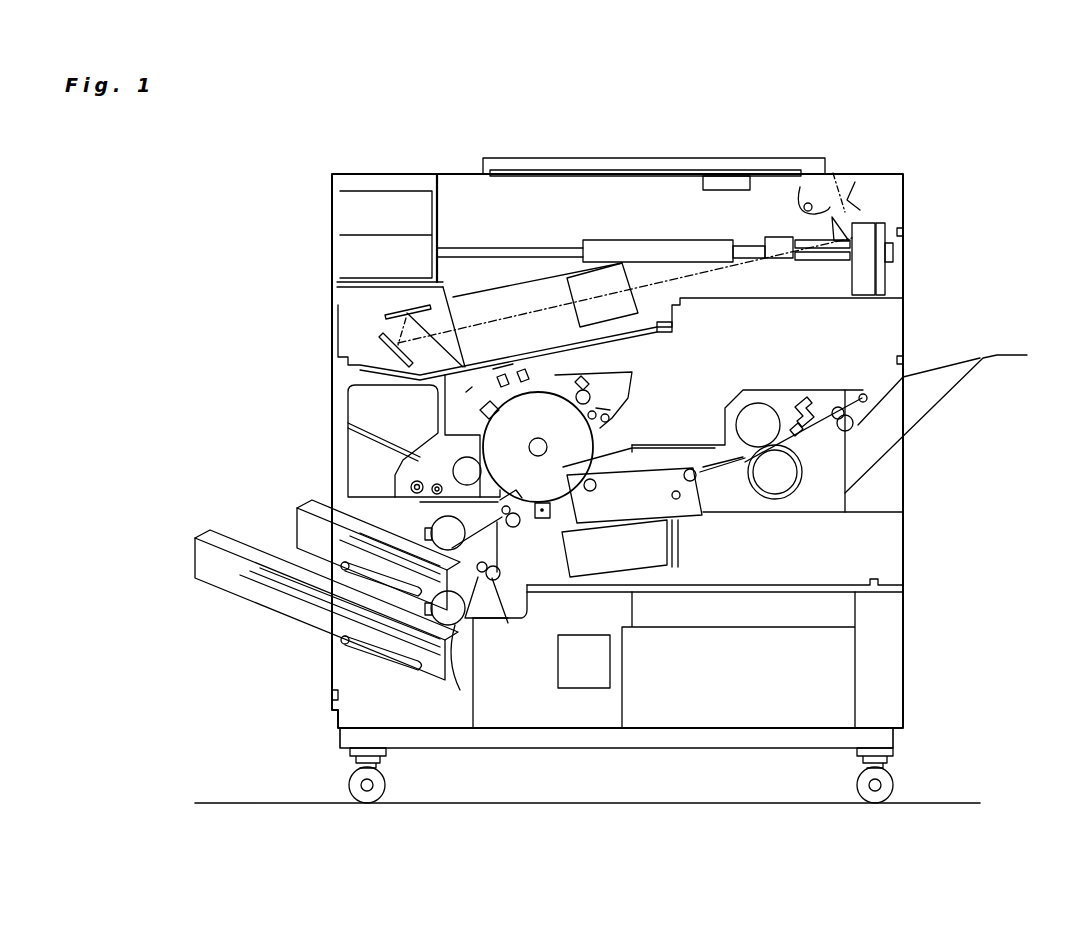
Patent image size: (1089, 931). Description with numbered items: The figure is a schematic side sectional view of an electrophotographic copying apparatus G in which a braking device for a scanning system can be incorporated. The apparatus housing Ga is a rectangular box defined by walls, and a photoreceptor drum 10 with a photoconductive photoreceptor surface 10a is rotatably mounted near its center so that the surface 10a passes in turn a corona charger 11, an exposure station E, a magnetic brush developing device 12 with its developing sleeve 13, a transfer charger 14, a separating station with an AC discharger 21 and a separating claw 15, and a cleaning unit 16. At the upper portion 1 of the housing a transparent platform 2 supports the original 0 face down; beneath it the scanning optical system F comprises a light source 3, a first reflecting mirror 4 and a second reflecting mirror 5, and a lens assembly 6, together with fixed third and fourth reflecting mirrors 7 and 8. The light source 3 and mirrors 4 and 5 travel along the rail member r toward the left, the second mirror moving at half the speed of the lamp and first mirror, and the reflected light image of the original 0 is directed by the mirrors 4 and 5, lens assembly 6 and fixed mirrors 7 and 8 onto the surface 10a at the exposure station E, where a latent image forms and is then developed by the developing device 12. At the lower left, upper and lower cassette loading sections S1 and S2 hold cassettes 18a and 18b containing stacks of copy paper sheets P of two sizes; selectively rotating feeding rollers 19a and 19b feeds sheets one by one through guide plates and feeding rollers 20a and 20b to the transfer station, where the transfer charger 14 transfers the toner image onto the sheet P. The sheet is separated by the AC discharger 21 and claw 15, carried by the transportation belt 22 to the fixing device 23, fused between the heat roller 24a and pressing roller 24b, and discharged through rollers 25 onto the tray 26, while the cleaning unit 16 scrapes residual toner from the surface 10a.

The upper portion 1 is at (472, 173).
The original 0 is at (570, 168).
The platform 2 is at (668, 160).
The light source 3 is at (808, 200).
The first reflecting mirror 4 is at (812, 212).
The second reflecting mirror 5 is at (880, 225).
The lens assembly 6 is at (612, 282).
The third reflecting mirror 7 is at (410, 304).
The fourth reflecting mirror 8 is at (378, 342).
The rail member r is at (495, 247).
The scanning optical system F is at (502, 285).
The exposure station E is at (472, 436).
The photoreceptor drum 10 is at (622, 396).
The photoreceptor surface 10a is at (613, 432).
The corona charger 11 is at (500, 372).
The developing device 12 is at (405, 478).
The developing sleeve 13 is at (432, 455).
The transfer charger 14 is at (545, 518).
The separating claw 15 is at (572, 458).
The cleaning unit 16 is at (628, 380).
The cassette 18a is at (295, 605).
The cassette 18b is at (312, 510).
The copy paper sheet feeding roller 19a is at (450, 620).
The copy paper sheet feeding roller 19b is at (390, 504).
The feeding roller 20a is at (490, 580).
The feeding roller 20b is at (516, 526).
The AC discharger 21 is at (650, 500).
The transportation belt 22 is at (700, 492).
The fixing device 23 is at (745, 483).
The heat roller 24a is at (790, 498).
The pressing roller 24b is at (758, 402).
The rollers 25 is at (830, 392).
The tray 26 is at (955, 380).
The copying apparatus G is at (925, 272).
The apparatus housing Ga is at (905, 307).
The copy paper sheet P is at (310, 527).
The upper cassette loading section S1 is at (305, 504).
The lower cassette loading section S2 is at (200, 548).